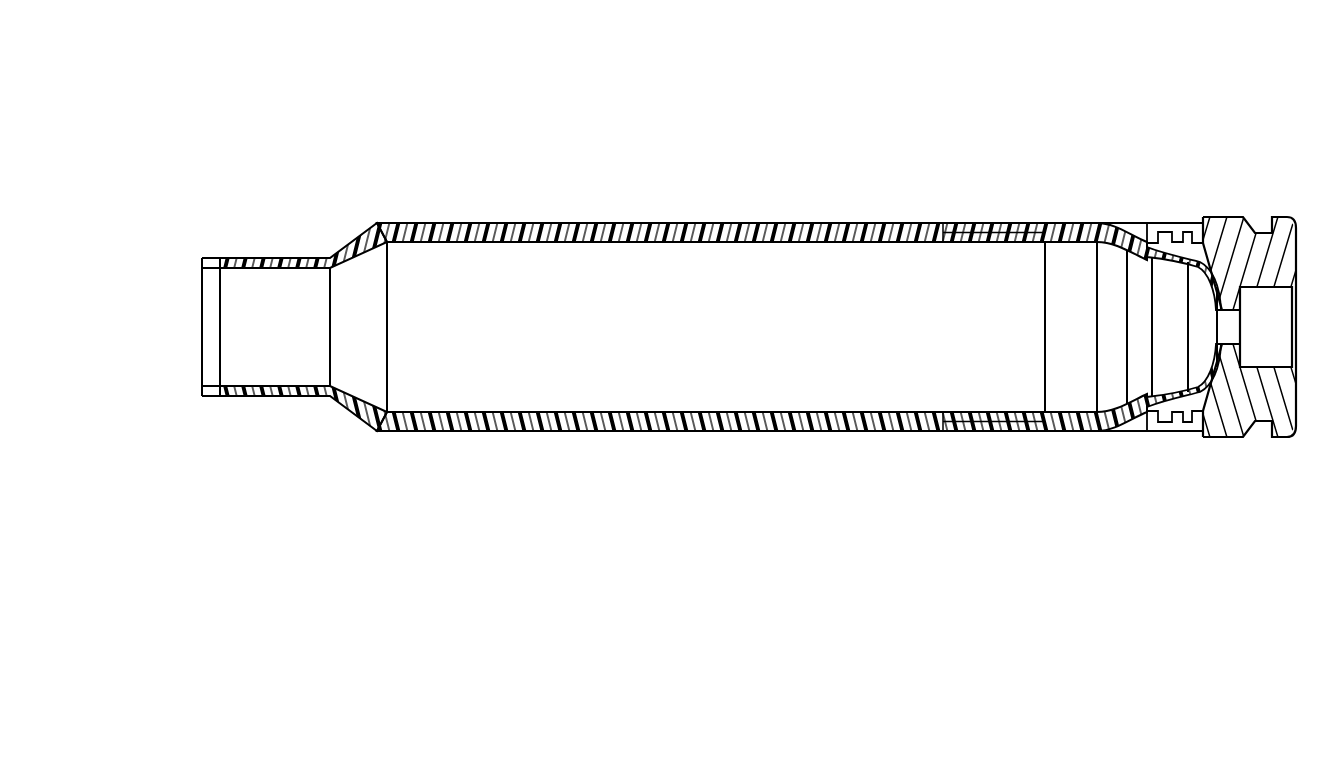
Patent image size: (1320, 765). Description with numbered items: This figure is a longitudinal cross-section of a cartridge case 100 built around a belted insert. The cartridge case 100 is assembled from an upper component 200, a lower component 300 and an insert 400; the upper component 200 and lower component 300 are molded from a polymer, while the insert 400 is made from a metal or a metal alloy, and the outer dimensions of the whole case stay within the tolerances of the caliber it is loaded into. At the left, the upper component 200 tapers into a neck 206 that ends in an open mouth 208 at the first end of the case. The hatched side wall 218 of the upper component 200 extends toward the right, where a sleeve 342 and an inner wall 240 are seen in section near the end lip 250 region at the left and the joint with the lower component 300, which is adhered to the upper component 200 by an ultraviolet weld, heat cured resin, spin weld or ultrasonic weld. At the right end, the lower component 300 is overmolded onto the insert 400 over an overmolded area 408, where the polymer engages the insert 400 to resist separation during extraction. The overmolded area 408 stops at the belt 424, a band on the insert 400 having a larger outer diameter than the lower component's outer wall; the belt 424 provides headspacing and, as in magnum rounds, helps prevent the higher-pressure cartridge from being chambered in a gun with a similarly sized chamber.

The cartridge case 100 is at (704, 48).
The upper component 200 is at (490, 135).
The neck 206 is at (280, 267).
The mouth 208 is at (180, 327).
The side wall 218 is at (650, 225).
The inner wall 240 is at (1013, 238).
The lip / end flange 250 is at (210, 278).
The lower component 300 is at (1070, 155).
The sleeve 342 is at (992, 222).
The insert 400 is at (1248, 156).
The overmolded area 408 is at (1147, 440).
The belt 424 is at (1220, 212).